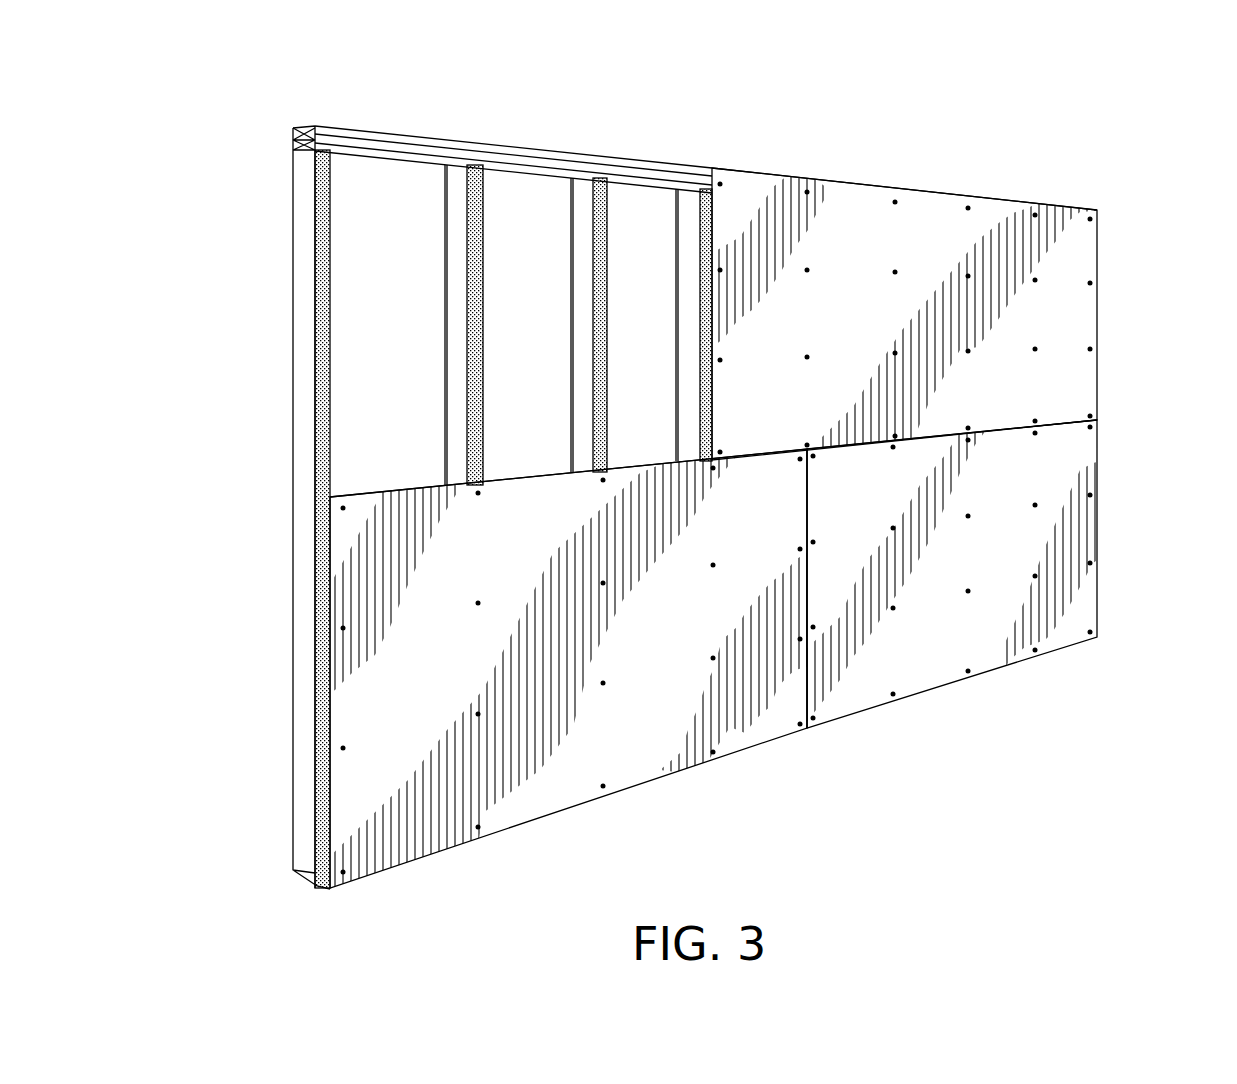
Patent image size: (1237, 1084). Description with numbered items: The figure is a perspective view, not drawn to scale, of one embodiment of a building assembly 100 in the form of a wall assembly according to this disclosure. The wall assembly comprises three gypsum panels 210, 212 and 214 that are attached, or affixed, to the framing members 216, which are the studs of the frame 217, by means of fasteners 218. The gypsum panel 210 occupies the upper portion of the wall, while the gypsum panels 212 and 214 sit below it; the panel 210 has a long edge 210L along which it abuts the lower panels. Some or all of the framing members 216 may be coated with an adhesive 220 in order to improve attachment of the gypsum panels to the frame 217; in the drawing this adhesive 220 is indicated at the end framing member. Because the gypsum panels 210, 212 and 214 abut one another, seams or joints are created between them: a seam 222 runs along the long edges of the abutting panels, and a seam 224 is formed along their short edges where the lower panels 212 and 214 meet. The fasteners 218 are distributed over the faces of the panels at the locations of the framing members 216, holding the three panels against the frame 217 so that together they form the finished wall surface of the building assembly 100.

The wall panel system 100 is at (801, 143).
The gypsum panel 210 is at (920, 226).
The upper edge of wall board panel 210L is at (1058, 208).
The gypsum panel 212 is at (1070, 522).
The gypsum panel 214 is at (642, 757).
The framing members 216 is at (453, 197).
The frame 217 is at (340, 140).
The fasteners 218 is at (336, 749).
The adhesive 220 is at (323, 285).
The seam 222 is at (777, 450).
The seam 224 is at (808, 592).